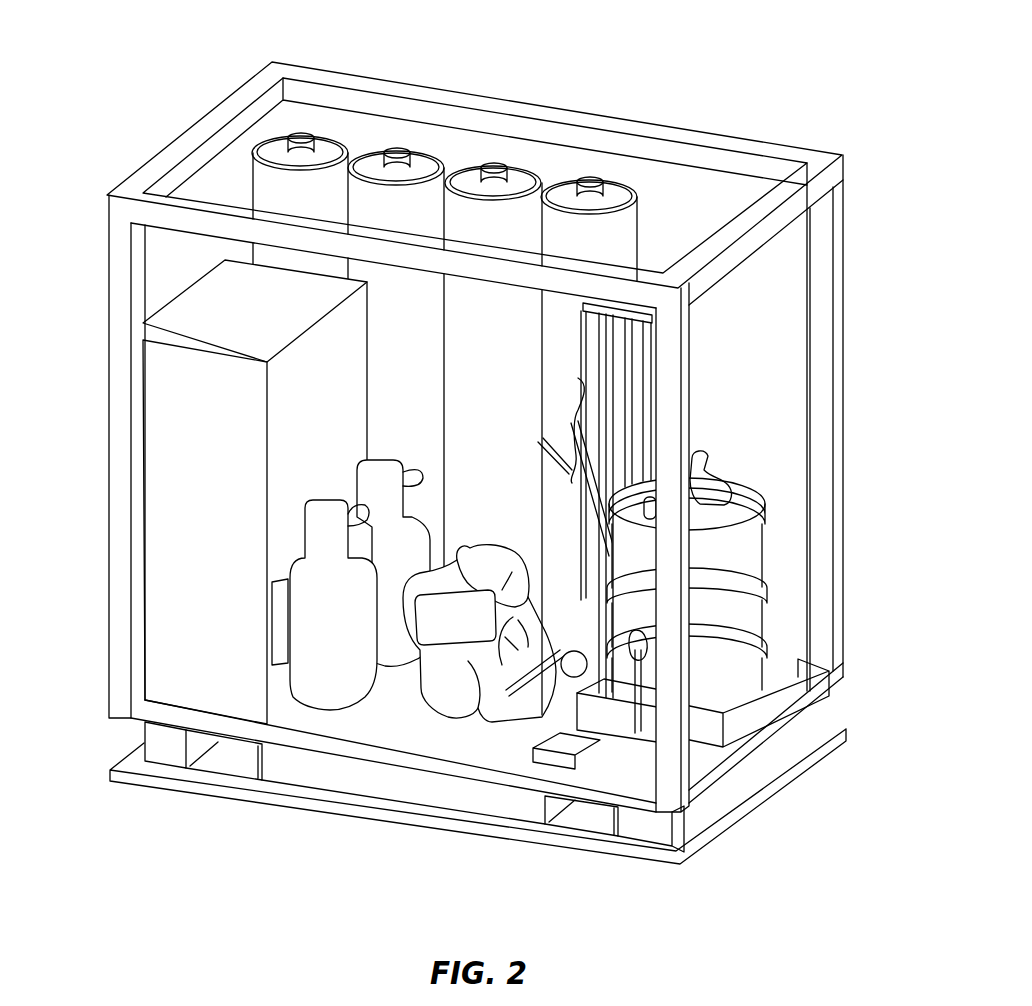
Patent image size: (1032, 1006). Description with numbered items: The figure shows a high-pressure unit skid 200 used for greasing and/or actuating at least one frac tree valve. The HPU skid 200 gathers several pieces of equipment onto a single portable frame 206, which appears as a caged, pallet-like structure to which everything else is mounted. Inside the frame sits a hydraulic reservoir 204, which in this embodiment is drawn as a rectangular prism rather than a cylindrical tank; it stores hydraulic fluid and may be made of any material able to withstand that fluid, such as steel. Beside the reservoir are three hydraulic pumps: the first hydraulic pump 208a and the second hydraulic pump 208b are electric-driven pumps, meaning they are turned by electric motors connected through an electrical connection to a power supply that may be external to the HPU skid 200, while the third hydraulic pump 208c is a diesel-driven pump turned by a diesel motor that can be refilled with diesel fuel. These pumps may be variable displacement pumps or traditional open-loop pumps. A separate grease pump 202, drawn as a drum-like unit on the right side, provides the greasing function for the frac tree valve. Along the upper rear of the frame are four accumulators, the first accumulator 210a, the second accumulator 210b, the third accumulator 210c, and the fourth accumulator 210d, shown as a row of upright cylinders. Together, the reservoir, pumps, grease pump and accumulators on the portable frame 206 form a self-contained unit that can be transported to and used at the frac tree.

The high-pressure unit (HPU) skid 200 is at (192, 40).
The grease pump 202 is at (745, 570).
The hydraulic reservoir 204 is at (172, 437).
The portable frame 206 is at (757, 767).
The first hydraulic pump 208a is at (327, 667).
The second hydraulic pump 208b is at (393, 653).
The third hydraulic pump 208c is at (437, 698).
The first accumulator 210a is at (328, 147).
The second accumulator 210b is at (423, 163).
The third accumulator 210c is at (518, 180).
The fourth accumulator 210d is at (614, 195).